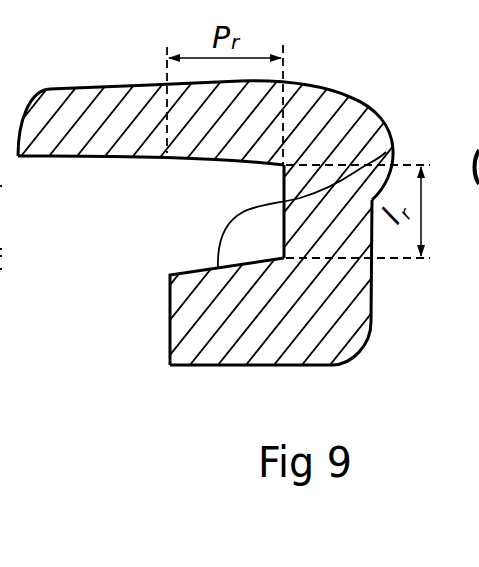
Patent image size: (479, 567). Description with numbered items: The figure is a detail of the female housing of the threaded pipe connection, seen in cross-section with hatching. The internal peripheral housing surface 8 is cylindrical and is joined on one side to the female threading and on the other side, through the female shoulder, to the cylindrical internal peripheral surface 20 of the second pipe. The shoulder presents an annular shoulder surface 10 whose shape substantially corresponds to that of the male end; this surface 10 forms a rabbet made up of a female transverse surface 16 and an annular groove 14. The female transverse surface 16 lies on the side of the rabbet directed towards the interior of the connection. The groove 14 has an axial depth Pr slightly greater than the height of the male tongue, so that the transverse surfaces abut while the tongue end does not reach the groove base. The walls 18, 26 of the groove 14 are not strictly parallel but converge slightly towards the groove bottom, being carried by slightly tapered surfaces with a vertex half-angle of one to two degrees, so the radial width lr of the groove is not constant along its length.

The internal peripheral housing surface 8 is at (38, 152).
The female shoulder surface 10 is at (150, 272).
The annular groove 14 is at (262, 197).
The female transverse surface 16 is at (168, 308).
The groove wall 18 is at (372, 198).
The cylindrical internal peripheral surface 20 is at (305, 365).
The groove wall 26 is at (288, 198).